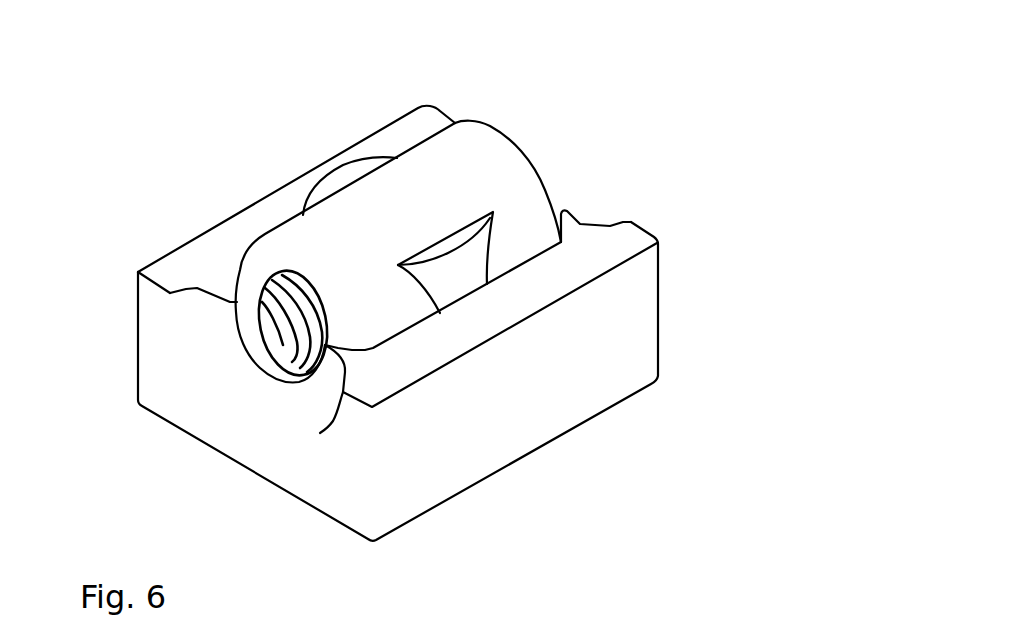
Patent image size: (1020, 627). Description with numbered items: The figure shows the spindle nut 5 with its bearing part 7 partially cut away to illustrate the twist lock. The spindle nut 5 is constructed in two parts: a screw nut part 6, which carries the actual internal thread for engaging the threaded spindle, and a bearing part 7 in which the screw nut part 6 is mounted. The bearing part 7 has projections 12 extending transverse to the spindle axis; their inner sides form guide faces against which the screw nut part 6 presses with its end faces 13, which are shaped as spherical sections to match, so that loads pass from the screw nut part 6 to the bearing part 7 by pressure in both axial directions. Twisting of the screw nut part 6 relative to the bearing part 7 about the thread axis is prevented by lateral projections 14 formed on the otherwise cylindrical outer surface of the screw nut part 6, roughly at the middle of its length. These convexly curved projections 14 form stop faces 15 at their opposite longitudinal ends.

The spindle nut 5 is at (435, 285).
The screw nut part 6 is at (332, 241).
The bearing part 7 is at (573, 388).
The projection 12 is at (223, 313).
The end face 13 is at (250, 267).
The lateral projection 14 is at (330, 174).
The stop face 15 is at (458, 240).